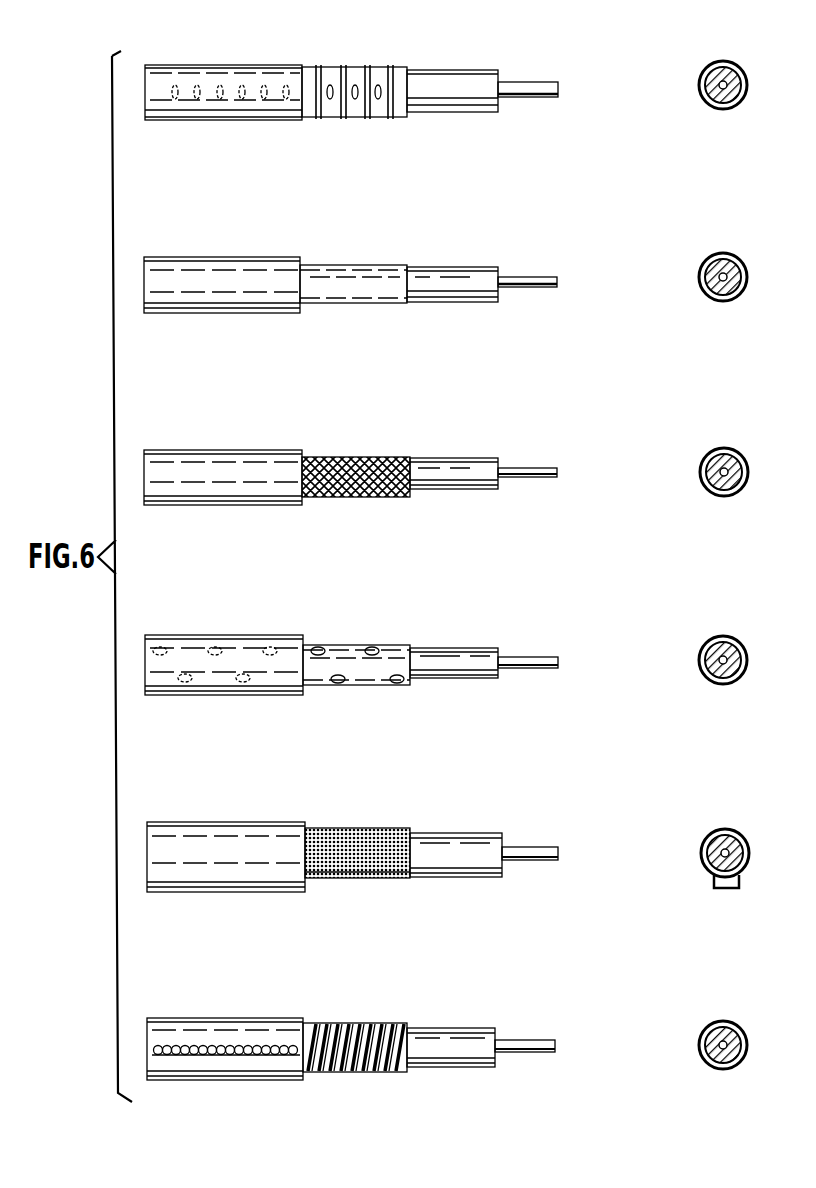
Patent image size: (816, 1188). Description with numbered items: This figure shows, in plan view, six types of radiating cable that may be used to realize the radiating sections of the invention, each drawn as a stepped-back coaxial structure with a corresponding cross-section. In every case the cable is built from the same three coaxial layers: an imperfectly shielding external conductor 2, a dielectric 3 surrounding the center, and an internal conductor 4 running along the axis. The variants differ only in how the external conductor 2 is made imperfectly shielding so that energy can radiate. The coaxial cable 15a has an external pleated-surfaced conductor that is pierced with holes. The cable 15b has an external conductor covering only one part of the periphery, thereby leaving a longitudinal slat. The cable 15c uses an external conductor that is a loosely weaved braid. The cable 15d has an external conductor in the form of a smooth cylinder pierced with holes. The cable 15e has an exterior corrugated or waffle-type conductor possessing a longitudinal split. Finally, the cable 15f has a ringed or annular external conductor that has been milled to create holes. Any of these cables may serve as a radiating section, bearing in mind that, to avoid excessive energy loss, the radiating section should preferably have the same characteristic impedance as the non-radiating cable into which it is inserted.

The coaxial cable 15a is at (218, 60).
The cable 15b is at (213, 251).
The cable 15c is at (236, 450).
The cable 15d is at (240, 635).
The cable 15e is at (233, 822).
The cable 15f is at (228, 1018).
The external conductor 2 is at (398, 67).
The dielectric 3 is at (448, 70).
The internal conductor 4 is at (520, 82).